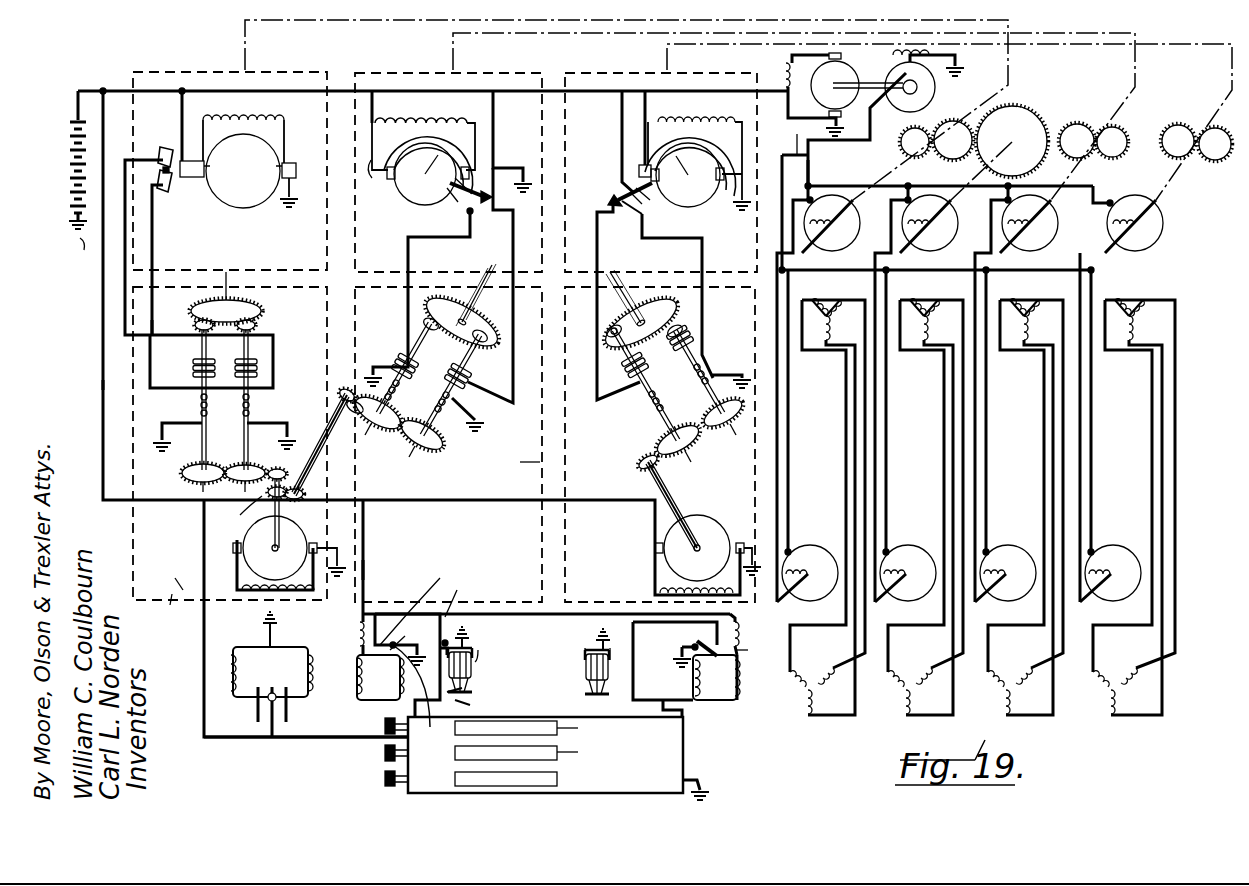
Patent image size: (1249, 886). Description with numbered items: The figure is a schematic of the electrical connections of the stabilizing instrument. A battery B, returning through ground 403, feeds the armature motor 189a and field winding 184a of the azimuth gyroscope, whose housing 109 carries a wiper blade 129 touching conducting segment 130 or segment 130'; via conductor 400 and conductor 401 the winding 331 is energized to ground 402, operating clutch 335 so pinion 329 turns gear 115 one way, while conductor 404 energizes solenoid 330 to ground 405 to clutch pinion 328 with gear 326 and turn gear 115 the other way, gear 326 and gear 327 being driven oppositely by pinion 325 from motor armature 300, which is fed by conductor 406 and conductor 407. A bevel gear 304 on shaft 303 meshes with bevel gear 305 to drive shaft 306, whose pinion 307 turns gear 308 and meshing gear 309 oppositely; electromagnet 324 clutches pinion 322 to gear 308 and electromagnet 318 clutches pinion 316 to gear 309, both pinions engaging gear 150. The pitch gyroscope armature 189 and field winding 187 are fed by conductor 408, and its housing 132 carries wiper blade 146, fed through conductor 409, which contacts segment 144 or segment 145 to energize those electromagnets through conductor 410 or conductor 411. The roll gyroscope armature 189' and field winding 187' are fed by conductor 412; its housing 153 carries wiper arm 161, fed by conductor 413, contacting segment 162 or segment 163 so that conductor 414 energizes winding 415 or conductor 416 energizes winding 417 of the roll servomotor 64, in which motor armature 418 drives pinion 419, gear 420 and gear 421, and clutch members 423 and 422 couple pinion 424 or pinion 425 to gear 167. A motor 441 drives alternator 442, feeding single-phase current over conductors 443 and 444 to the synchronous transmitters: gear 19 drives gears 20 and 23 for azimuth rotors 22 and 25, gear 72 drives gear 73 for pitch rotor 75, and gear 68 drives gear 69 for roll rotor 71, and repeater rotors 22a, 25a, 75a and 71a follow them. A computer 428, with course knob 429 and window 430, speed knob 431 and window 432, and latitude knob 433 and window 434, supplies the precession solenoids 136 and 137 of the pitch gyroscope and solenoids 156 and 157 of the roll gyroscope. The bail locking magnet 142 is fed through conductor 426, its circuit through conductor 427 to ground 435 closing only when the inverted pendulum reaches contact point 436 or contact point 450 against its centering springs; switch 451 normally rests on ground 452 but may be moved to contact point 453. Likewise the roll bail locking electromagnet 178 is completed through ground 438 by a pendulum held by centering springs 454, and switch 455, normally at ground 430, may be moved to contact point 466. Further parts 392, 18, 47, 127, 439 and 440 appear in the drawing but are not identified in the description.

The battery B is at (92, 152).
The conductor 400 is at (182, 103).
The conducting segment 130 is at (159, 140).
The conducting segment 130' is at (172, 252).
The wiper blade 129 is at (172, 175).
The field winding 184a is at (240, 120).
The armature motor 189a is at (240, 205).
The azimuth gyroscope housing 109 is at (292, 162).
The conductor 404 is at (152, 250).
The ground 403 is at (80, 251).
The conductor 401 is at (125, 270).
The conductor 406 is at (103, 385).
The gear 115 is at (262, 303).
The pinion 328 is at (196, 322).
The pinion 329 is at (255, 325).
The solenoid 392 is at (192, 362).
The clutch 335 is at (258, 368).
The solenoid 330 is at (198, 398).
The winding of control electromagnet 331 is at (252, 397).
The ground 405 is at (173, 450).
The ground 402 is at (292, 432).
The gear 326 is at (190, 480).
The gear 327 is at (238, 482).
The pinion 325 is at (277, 466).
The shaft 303 is at (281, 512).
The pinion 307 is at (335, 395).
The bevel gear 304 is at (234, 513).
The motor armature 300 is at (246, 555).
The conductor 407 is at (186, 570).
The unit 18 is at (168, 596).
The field winding 187 is at (423, 130).
The pitch gyroscope housing 132 is at (428, 174).
The pitch gyroscope armature 189 is at (417, 178).
The conductor 408 is at (374, 181).
The conductor 409 is at (494, 150).
The conducting segment 145 is at (488, 183).
The wiper blade 146 is at (455, 202).
The conducting segment 144 is at (473, 214).
The conductor 410 is at (409, 260).
The conductor 411 is at (512, 264).
The pinion 322 is at (430, 312).
The gear 150 is at (496, 308).
The gear 308 is at (395, 415).
The gear 309 is at (432, 448).
The electromagnet 324 is at (398, 362).
The pinion 316 is at (470, 368).
The electromagnet 318 is at (462, 403).
The shaft 306 is at (348, 405).
The bevel gear 305 is at (352, 478).
The unit 47 is at (520, 460).
The conductor 412 is at (622, 106).
The conductor 413 is at (622, 130).
The field winding 187' is at (699, 152).
The roll gyroscope housing 153 is at (685, 175).
The roll gyroscope armature 189' is at (690, 184).
The conducting segment 162 is at (614, 199).
The conducting segment 163 is at (632, 210).
The wiper arm 161 is at (660, 200).
The conductor 414 is at (597, 256).
The conductor 416 is at (702, 247).
The pinion 425 is at (665, 312).
The gear 167 is at (640, 300).
The gear 420 is at (654, 445).
The gear 421 is at (716, 435).
The clutch member 423 is at (625, 372).
The clutch member 422 is at (692, 330).
The pinion 424 is at (610, 338).
The servomotor winding 415 is at (645, 395).
The electromagnet winding 417 is at (700, 362).
The pinion 419 is at (640, 468).
The motor armature 418 is at (700, 512).
The motor 441 is at (852, 72).
The alternator 442 is at (930, 98).
The conductor 444 is at (793, 194).
The conductor 443 is at (809, 165).
The gear 19 is at (935, 158).
The gear 20 is at (951, 133).
The gear 23 is at (1020, 104).
The gear 72 is at (1080, 124).
The gear 73 is at (1115, 127).
The gear 68 is at (1180, 125).
The gear 69 is at (1216, 160).
The rotor 22 is at (850, 234).
The rotor 25 is at (944, 231).
The rotor 75 is at (1057, 232).
The rotor 71 is at (1164, 216).
The repeater rotor 22a is at (810, 545).
The repeater rotor 25a is at (908, 545).
The repeater rotor 75a is at (1008, 545).
The repeater rotor 71a is at (1116, 548).
The relay 127 is at (236, 650).
The bail locking magnet 142 is at (300, 640).
The precession solenoid 136 is at (352, 680).
The precession solenoid 137 is at (398, 609).
The conductor 439 is at (214, 730).
The conductor 426 is at (366, 581).
The contact point 453 is at (366, 622).
The switch 451 is at (417, 603).
The contact point 450 is at (456, 611).
The conductor 427 is at (409, 636).
The ground 452 is at (415, 694).
The window 434 is at (567, 612).
The window 430 is at (611, 691).
The window 432 is at (578, 751).
The knob 429 is at (383, 724).
The knob 431 is at (383, 748).
The knob 433 is at (383, 777).
The ground 435 is at (470, 630).
The contact point 436 is at (478, 655).
The computer 428 is at (470, 690).
The centering springs 454 is at (474, 704).
The ground 438 is at (603, 628).
The precession solenoid 156 is at (693, 672).
The precession solenoid 157 is at (740, 682).
The contact point 466 is at (700, 640).
The switch 455 is at (693, 646).
The servomotor 64 is at (742, 626).
The bail locking electromagnet 178 is at (757, 650).
The ground conductor 440 is at (705, 785).